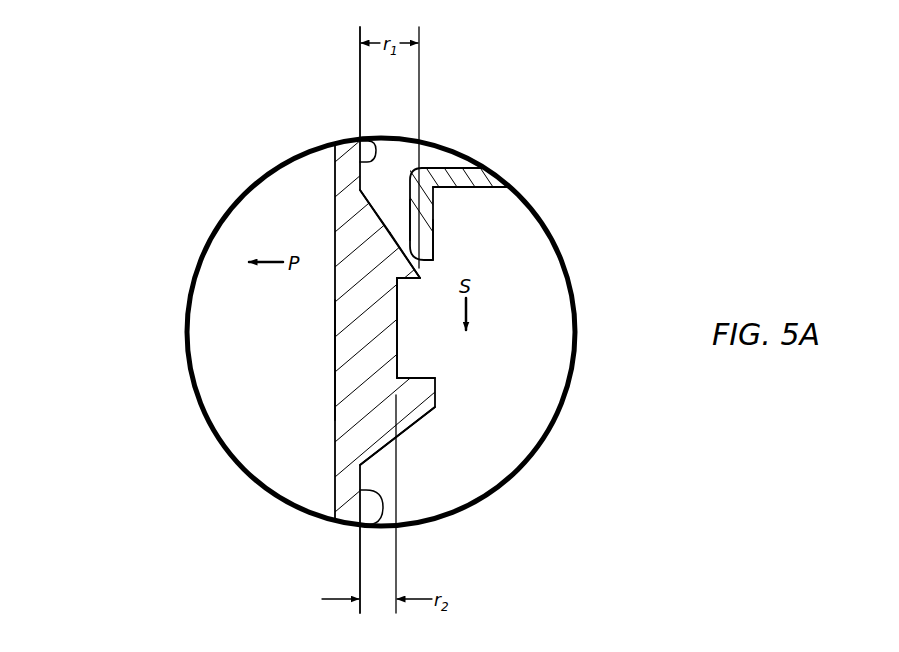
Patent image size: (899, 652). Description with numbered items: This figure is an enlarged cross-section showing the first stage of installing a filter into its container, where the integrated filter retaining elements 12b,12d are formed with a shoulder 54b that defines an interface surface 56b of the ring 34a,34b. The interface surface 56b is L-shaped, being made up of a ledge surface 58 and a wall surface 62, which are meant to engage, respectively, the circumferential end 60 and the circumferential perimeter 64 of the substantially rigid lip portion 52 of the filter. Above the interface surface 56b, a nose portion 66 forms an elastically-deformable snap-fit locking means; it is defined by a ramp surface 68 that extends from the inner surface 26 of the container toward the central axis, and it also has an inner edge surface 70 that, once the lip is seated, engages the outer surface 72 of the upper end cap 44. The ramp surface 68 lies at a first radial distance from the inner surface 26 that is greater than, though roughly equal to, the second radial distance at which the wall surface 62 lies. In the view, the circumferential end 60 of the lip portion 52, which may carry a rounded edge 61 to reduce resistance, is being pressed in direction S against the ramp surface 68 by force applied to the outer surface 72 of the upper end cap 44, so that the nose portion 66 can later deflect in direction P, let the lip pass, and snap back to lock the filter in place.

The inner surface 26 is at (372, 137).
The rounded edge 61 is at (403, 248).
The inner edge surface 70 is at (396, 292).
The ramp surface 68 is at (378, 217).
The lip portion 52 is at (431, 155).
The outer surface 72 is at (455, 166).
The upper end cap 44 is at (473, 194).
The circumferential perimeter 64 is at (412, 218).
The circumferential end 60 is at (433, 243).
The nose portion 66 is at (407, 273).
The ledge surface 58 is at (403, 379).
The shoulder 54b is at (418, 432).
The interface surface 56b is at (387, 324).
The ring 34a,34b is at (321, 322).
The wall surface 62 is at (337, 344).
The integrated filter retaining elements 12b,12d is at (321, 371).